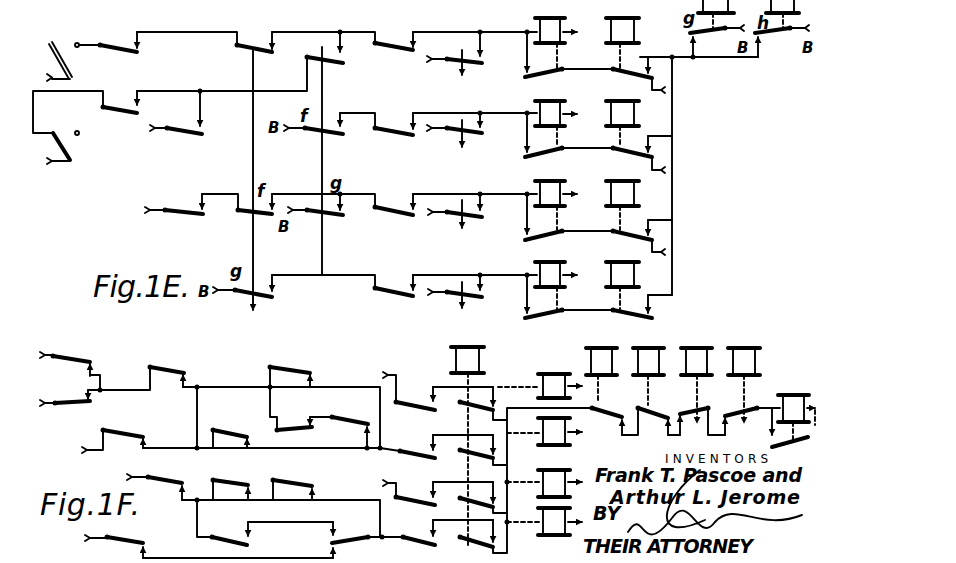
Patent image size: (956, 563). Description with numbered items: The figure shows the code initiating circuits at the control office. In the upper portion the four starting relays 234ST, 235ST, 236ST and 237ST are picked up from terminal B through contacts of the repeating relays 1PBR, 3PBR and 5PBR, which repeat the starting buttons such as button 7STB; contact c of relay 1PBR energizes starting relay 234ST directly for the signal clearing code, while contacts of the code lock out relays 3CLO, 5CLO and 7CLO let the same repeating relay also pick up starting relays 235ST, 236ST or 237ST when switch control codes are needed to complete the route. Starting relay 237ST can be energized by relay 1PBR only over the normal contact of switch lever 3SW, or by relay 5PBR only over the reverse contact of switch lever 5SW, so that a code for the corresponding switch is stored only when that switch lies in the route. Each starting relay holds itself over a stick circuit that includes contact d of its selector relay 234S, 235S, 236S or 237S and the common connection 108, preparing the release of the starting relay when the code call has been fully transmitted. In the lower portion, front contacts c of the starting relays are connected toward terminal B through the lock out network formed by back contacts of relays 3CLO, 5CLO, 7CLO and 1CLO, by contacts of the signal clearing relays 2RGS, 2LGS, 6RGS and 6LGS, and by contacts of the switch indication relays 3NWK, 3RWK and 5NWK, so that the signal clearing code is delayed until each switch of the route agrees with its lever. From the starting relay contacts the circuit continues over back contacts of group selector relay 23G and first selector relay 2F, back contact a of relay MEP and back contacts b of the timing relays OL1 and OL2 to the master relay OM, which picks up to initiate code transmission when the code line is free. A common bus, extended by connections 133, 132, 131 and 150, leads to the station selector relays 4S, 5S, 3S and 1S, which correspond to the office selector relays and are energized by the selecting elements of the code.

In FIG. 1E, the switch lever 5SW is at (66, 47).
In FIG. 1E, the signal clearing relay 6RGS is at (128, 29).
In FIG. 1F, the signal clearing relay 6RGS is at (231, 422).
In FIG. 1E, the repeating relay 5PBR is at (355, 81).
In FIG. 1E, the repeating relay 1PBR is at (391, 161).
In FIG. 1E, the code lock out relay 7CLO is at (400, 29).
In FIG. 1F, the code lock out relay 7CLO is at (297, 417).
In FIG. 1E, the push button 7STB is at (450, 43).
In FIG. 1E, the starting relay 237ST is at (556, 38).
In FIG. 1F, the starting relay 237ST is at (408, 380).
In FIG. 1E, the selector relay 237S is at (614, 57).
In FIG. 1E, the wire 108 is at (699, 165).
In FIG. 1E, the signal clearing relay 2RGS is at (123, 90).
In FIG. 1F, the signal clearing relay 2RGS is at (347, 530).
In FIG. 1E, the signal clearing relay 2LGS is at (168, 113).
In FIG. 1F, the signal clearing relay 2LGS is at (109, 534).
In FIG. 1E, the switch lever 3SW is at (61, 144).
In FIG. 1E, the code lock out relay 5CLO is at (392, 112).
In FIG. 1F, the code lock out relay 5CLO is at (288, 446).
In FIG. 1E, the starting relay 236ST is at (550, 119).
In FIG. 1F, the starting relay 236ST is at (420, 436).
In FIG. 1E, the selector relay 236S is at (617, 135).
In FIG. 1E, the signal clearing relay 6LGS is at (169, 194).
In FIG. 1F, the signal clearing relay 6LGS is at (112, 428).
In FIG. 1E, the code lock out relay 3CLO is at (394, 193).
In FIG. 1F, the code lock out relay 3CLO is at (151, 416).
In FIG. 1E, the push button relay 3PBR contact 3PBR is at (456, 203).
In FIG. 1E, the starting relay 235ST is at (550, 200).
In FIG. 1F, the starting relay 235ST is at (410, 483).
In FIG. 1E, the selector relay 235S is at (617, 218).
In FIG. 1E, the code lock out relay 1CLO is at (394, 273).
In FIG. 1F, the code lock out relay 1CLO is at (63, 347).
In FIG. 1E, the starting relay 234ST is at (550, 279).
In FIG. 1F, the starting relay 234ST is at (418, 525).
In FIG. 1E, the final selector relay 234S is at (622, 284).
In FIG. 1F, the switch normal indication relay 3NWK is at (61, 395).
In FIG. 1F, the switch normal indication relay 5NWK is at (299, 413).
In FIG. 1F, the switch reverse indication relay 3RWK is at (234, 524).
In FIG. 1F, the group selector relay 23G is at (470, 436).
In FIG. 1F, the wire 133 is at (519, 377).
In FIG. 1F, the station selector relay 4S is at (566, 375).
In FIG. 1F, the relay 5S is at (550, 430).
In FIG. 1F, the wire 132 is at (523, 444).
In FIG. 1F, the station selector relay 3S is at (563, 473).
In FIG. 1F, the wire 131 is at (523, 472).
In FIG. 1F, the wire 150 is at (523, 512).
In FIG. 1F, the station selector relay 1S is at (540, 533).
In FIG. 1F, the first selector relay 2F is at (604, 380).
In FIG. 1F, the MEP relay MEP is at (649, 380).
In FIG. 1F, the timing relay OL1 is at (696, 380).
In FIG. 1F, the timing relay OL2 is at (742, 380).
In FIG. 1F, the master relay OM is at (793, 409).